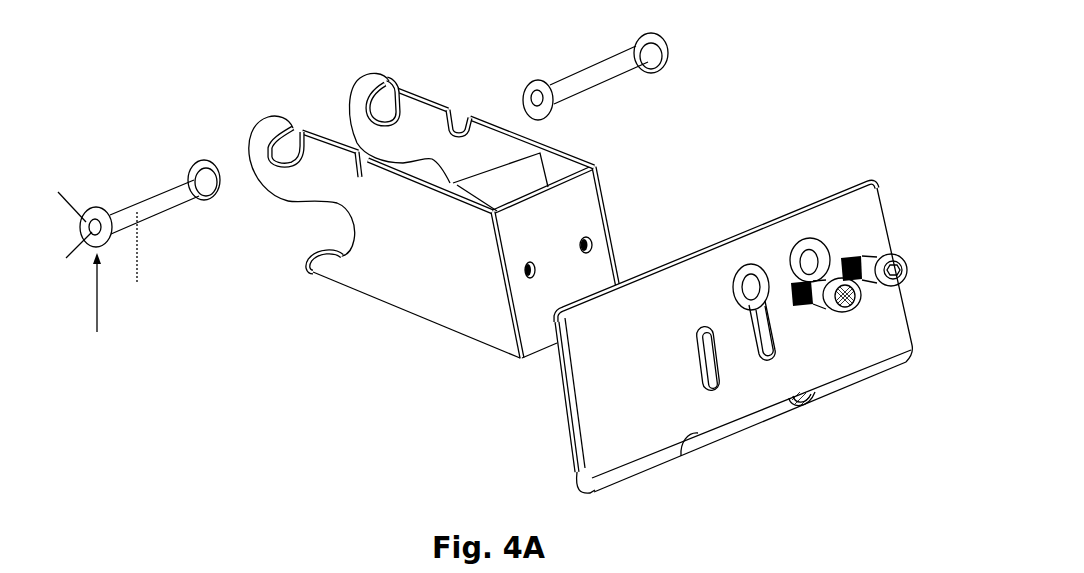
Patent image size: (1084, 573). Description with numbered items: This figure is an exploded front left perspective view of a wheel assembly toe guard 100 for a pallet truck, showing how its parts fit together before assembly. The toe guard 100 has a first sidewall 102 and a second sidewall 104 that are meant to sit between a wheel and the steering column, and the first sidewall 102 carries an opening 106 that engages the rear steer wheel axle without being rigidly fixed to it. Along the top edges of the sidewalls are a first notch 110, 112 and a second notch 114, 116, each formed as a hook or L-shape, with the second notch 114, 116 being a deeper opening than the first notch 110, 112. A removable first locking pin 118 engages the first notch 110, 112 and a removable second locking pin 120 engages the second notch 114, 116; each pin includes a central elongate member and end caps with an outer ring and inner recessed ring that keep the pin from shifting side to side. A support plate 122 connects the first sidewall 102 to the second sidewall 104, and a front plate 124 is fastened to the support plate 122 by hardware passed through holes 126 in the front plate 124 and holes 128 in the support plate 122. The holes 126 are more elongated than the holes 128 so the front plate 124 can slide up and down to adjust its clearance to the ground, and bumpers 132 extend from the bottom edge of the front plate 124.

The wheel assembly toe guard 100 is at (771, 58).
The first sidewall 102 is at (463, 292).
The second sidewall 104 is at (414, 124).
The opening 106 is at (265, 216).
The first notch 110 is at (367, 176).
The first notch 112 is at (460, 123).
The second notch 114 is at (295, 130).
The second notch 116 is at (392, 91).
The first locking pin 118 is at (608, 72).
The second locking pin 120 is at (163, 193).
The support plate 122 is at (575, 207).
The front plate 124 is at (813, 347).
The holes 126 is at (708, 367).
The holes 128 is at (587, 247).
The bumpers 132 is at (660, 458).